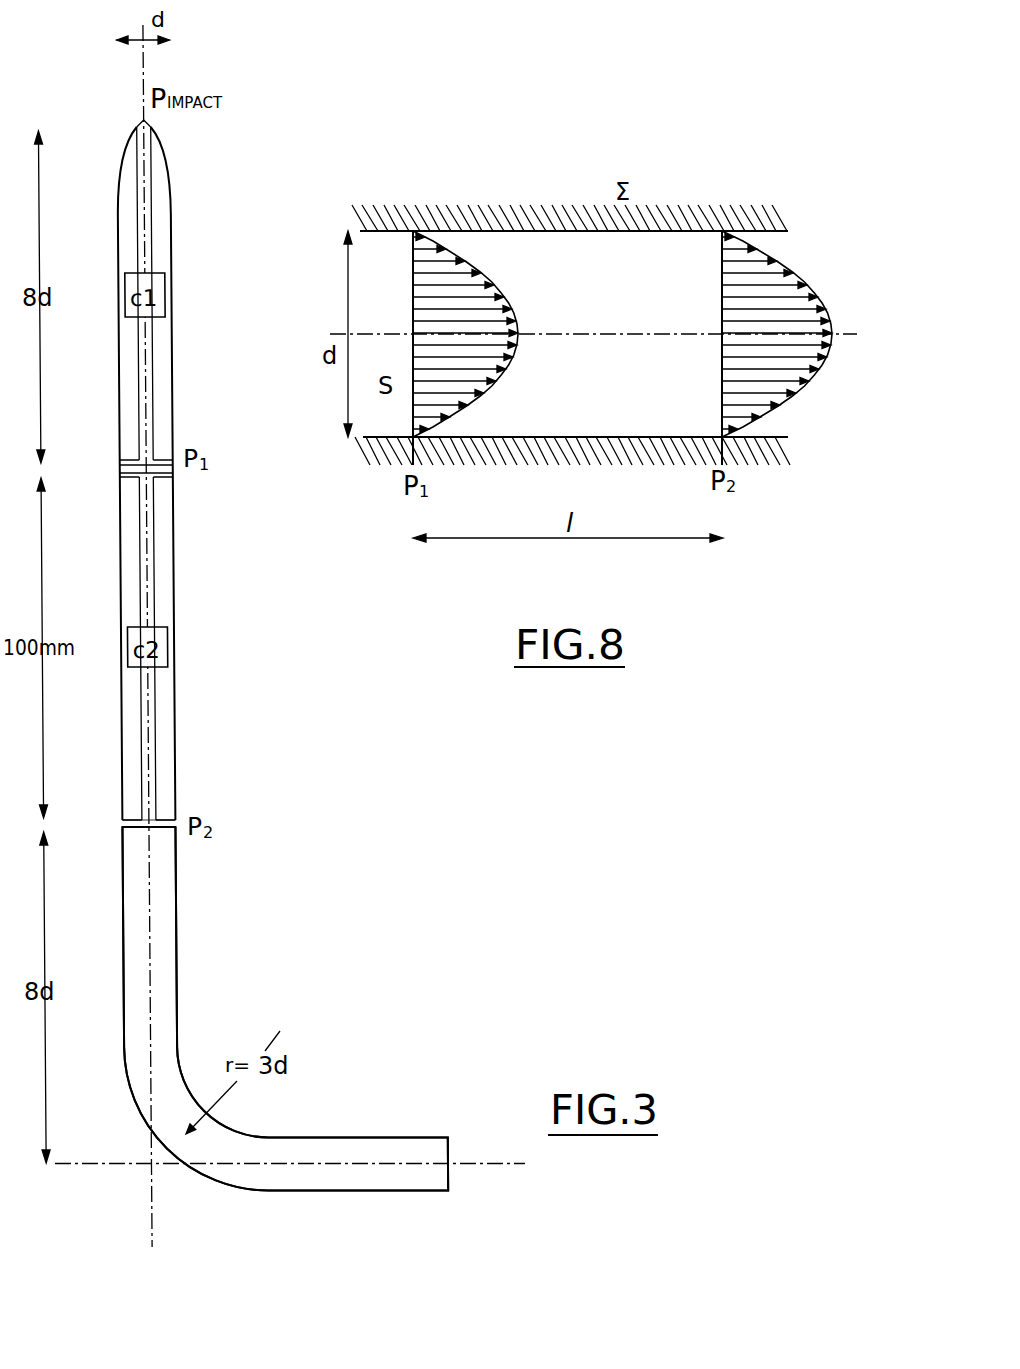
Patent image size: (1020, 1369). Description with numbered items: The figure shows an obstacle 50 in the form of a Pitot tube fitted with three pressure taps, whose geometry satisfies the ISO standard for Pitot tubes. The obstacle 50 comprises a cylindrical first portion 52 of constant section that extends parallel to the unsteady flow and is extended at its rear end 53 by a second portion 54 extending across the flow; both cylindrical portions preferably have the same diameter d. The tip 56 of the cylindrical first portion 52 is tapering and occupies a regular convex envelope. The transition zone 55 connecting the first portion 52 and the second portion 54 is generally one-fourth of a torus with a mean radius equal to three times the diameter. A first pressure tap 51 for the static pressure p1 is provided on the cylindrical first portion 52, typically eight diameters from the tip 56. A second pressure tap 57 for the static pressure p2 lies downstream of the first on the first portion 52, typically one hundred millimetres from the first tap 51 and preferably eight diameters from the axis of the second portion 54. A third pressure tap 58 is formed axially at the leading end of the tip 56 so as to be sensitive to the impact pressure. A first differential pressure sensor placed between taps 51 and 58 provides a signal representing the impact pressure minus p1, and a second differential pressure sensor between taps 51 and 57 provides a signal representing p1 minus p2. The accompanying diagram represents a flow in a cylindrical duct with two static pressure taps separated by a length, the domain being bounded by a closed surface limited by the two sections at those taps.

The obstacle 50 is at (195, 612).
The first pressure tap 51 is at (180, 471).
The cylindrical first portion 52 is at (163, 732).
The rear end 53 is at (163, 993).
The second portion 54 is at (378, 1177).
The transition zone 55 is at (175, 1136).
The tip 56 is at (167, 172).
The second pressure tap 57 is at (187, 808).
The third pressure tap 58 is at (138, 116).